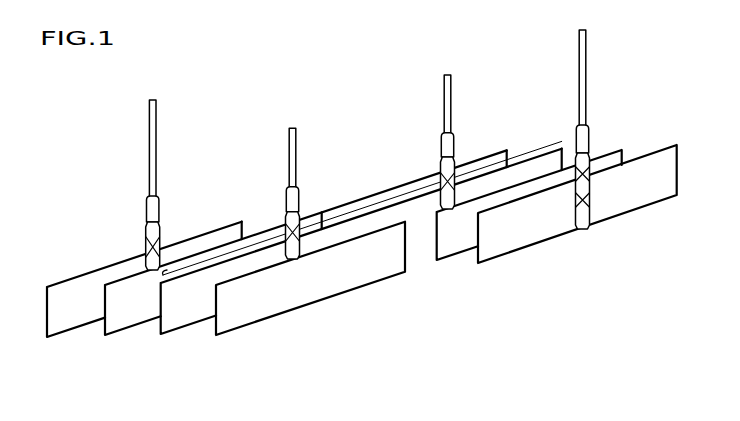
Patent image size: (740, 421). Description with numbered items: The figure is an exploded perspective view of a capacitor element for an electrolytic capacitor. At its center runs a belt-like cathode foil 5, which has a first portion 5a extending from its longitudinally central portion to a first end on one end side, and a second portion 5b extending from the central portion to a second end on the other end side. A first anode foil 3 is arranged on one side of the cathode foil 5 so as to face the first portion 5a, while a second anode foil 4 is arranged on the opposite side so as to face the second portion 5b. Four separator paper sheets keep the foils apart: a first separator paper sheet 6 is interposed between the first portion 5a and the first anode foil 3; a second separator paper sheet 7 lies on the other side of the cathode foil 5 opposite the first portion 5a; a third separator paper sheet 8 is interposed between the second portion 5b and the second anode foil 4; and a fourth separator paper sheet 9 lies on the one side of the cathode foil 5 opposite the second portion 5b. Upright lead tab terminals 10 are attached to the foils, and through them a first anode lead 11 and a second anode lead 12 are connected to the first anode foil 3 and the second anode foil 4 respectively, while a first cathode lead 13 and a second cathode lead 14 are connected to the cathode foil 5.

The first anode foil 3 is at (73, 300).
The second anode foil 4 is at (528, 222).
The cathode foil 5 is at (180, 303).
The first portion 5a is at (258, 235).
The second portion 5b is at (464, 166).
The first separator paper sheet 6 is at (125, 303).
The second separator paper sheet 7 is at (263, 293).
The third separator paper sheet 8 is at (450, 228).
The fourth separator paper sheet 9 is at (358, 210).
The lead tab terminal 10 is at (150, 212).
The first anode lead 11 is at (150, 157).
The second anode lead 12 is at (586, 55).
The first cathode lead 13 is at (452, 102).
The second cathode lead 14 is at (290, 155).